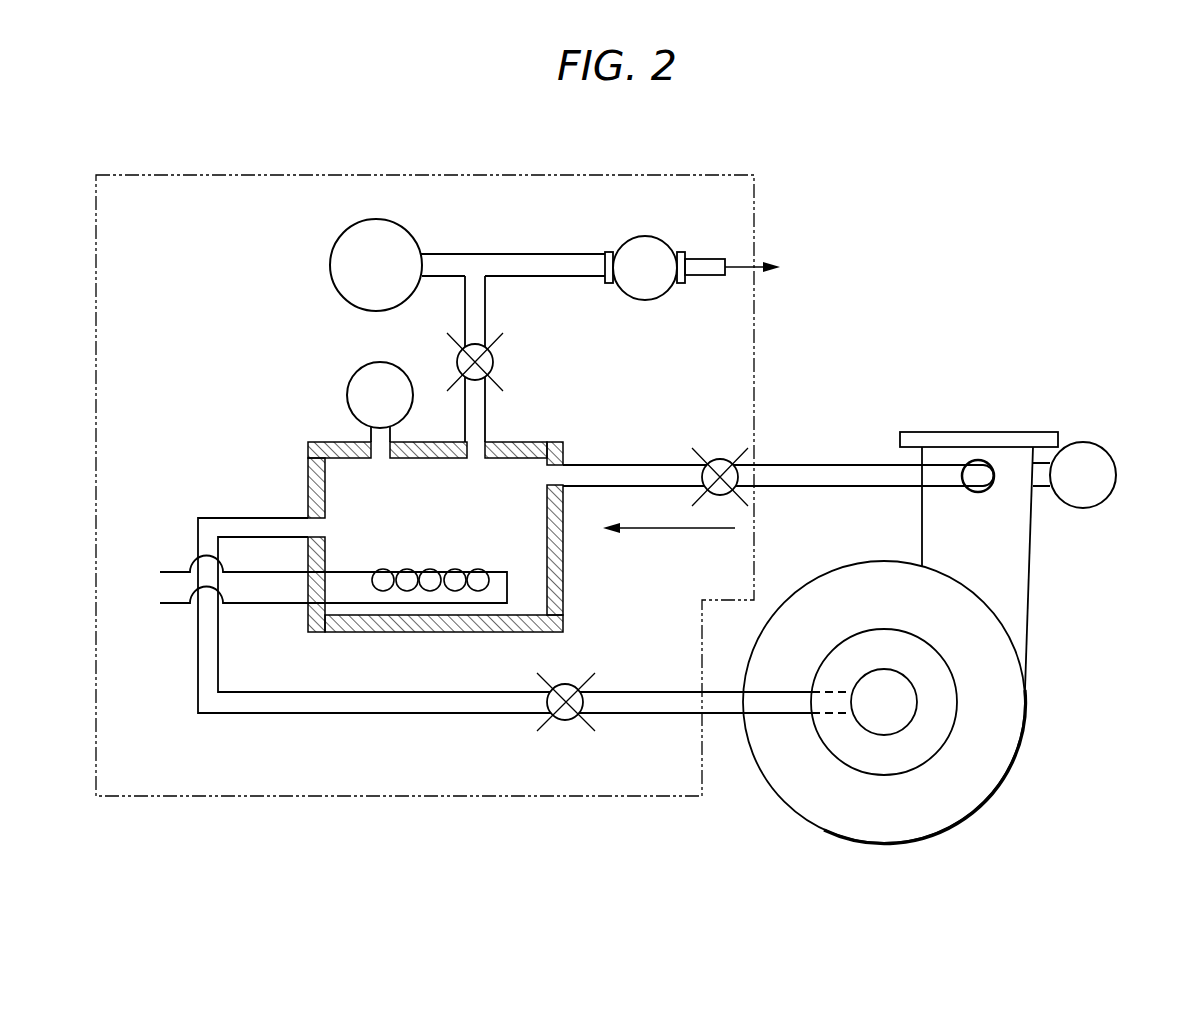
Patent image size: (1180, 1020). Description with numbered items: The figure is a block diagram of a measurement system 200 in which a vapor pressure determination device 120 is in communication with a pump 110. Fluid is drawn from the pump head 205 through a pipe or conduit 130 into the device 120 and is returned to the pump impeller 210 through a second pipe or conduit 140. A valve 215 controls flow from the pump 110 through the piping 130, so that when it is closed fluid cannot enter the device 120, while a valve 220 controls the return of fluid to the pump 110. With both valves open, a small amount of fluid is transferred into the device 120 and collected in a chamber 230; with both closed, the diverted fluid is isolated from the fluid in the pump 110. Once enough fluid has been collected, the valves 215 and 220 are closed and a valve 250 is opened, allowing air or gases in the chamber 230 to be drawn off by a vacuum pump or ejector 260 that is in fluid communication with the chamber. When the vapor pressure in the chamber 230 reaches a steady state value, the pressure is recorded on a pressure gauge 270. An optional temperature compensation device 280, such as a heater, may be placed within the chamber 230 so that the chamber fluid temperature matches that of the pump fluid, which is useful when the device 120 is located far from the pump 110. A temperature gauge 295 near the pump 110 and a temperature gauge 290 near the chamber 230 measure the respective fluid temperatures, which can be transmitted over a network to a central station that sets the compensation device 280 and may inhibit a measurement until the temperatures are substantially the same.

The fluid supply system 200 is at (732, 131).
The pump 110 is at (1012, 763).
The vapor pressure determination device 120 is at (398, 797).
The pipe or conduit 130 is at (815, 463).
The pipe or conduit 140 is at (777, 712).
The pump head 205 is at (992, 492).
The pump impeller 210 is at (908, 702).
The valve 215 is at (710, 455).
The valve 220 is at (563, 720).
The chamber 230 is at (302, 468).
The valve 250 is at (493, 367).
The vacuum pump or ejector 260 is at (645, 300).
The pressure gauge 270 is at (408, 222).
The temperature compensation device 280 is at (380, 578).
The temperature gauge 290 is at (352, 380).
The temperature gauge 295 is at (1087, 443).